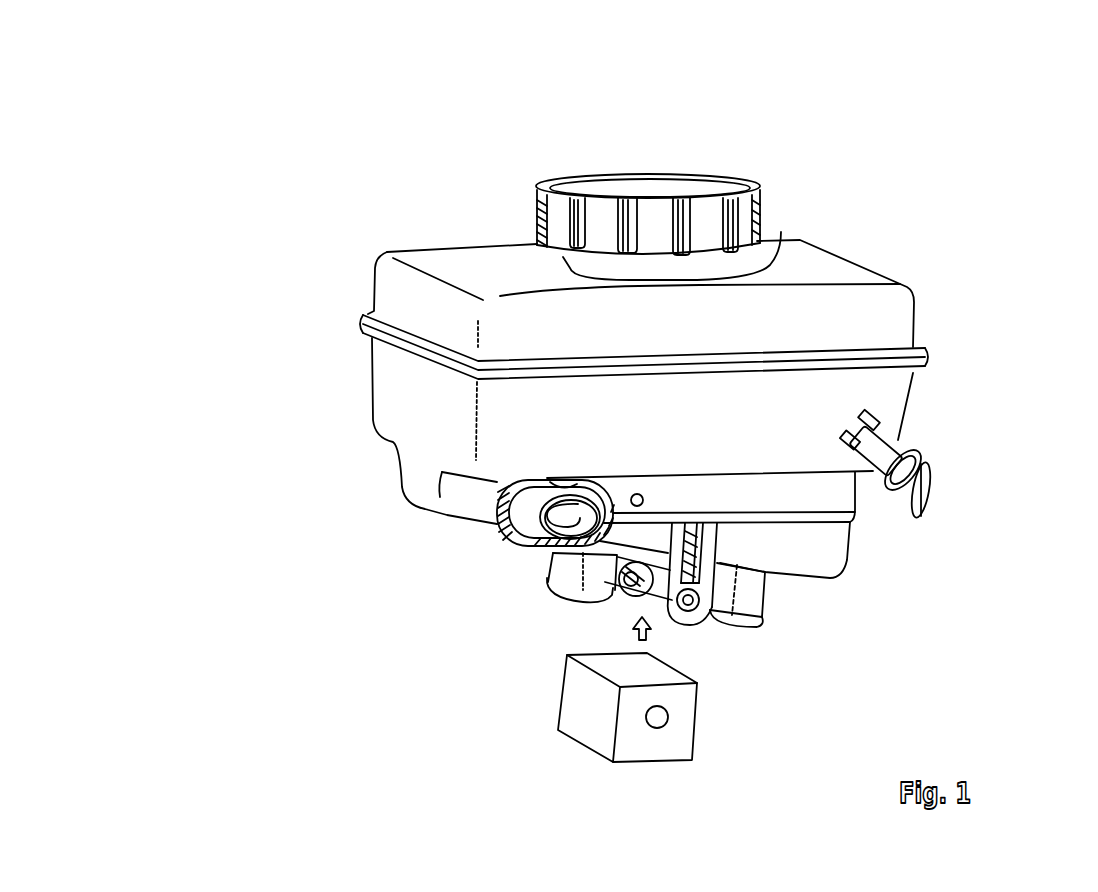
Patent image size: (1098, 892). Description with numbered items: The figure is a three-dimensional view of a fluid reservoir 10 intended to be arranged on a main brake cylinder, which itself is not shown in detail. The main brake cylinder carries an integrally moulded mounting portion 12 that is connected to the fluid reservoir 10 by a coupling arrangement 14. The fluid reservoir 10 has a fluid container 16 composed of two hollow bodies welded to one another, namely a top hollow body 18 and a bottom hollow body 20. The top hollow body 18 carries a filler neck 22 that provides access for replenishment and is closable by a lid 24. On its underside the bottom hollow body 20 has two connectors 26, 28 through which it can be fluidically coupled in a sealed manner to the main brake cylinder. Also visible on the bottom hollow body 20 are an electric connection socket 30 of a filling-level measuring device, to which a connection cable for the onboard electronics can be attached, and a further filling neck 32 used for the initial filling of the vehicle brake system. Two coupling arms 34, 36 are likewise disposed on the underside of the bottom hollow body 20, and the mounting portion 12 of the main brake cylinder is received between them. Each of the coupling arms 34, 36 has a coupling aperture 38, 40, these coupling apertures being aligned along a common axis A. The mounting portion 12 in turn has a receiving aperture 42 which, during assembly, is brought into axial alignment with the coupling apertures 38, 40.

The fluid reservoir 10 is at (898, 222).
The mounting portion 12 is at (590, 753).
The coupling arrangement 14 is at (506, 603).
The fluid container 16 is at (914, 331).
The top hollow body 18 is at (416, 260).
The bottom hollow body 20 is at (370, 393).
The filler neck 22 is at (784, 240).
The lid 24 is at (632, 174).
The connector 26 is at (557, 569).
The connector 28 is at (760, 592).
The electric connection socket 30 is at (507, 528).
The further filling neck 32 is at (900, 437).
The coupling arm 34 is at (600, 603).
The coupling arm 36 is at (683, 620).
The coupling aperture 38 is at (560, 590).
The coupling aperture 40 is at (723, 620).
The receiving aperture 42 is at (655, 728).
The common axis A is at (733, 640).